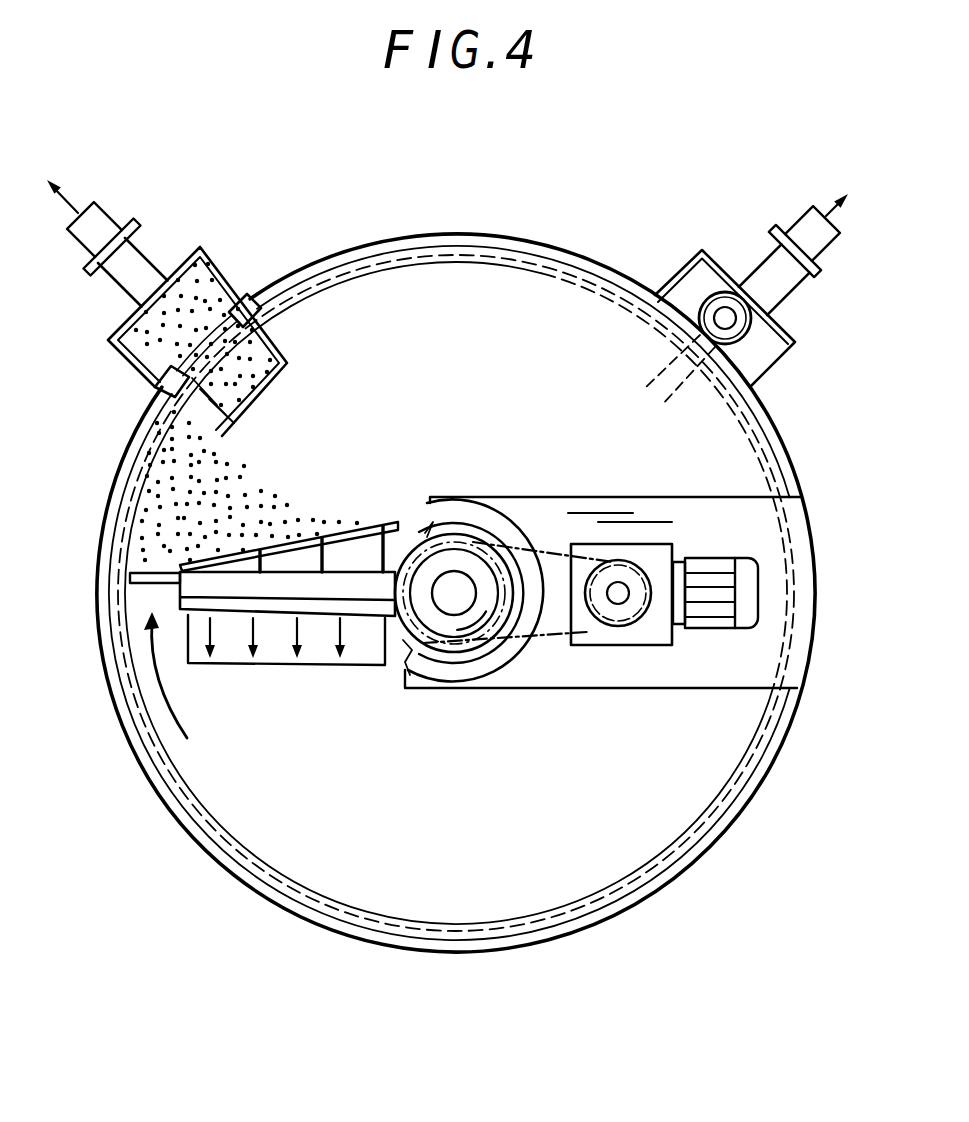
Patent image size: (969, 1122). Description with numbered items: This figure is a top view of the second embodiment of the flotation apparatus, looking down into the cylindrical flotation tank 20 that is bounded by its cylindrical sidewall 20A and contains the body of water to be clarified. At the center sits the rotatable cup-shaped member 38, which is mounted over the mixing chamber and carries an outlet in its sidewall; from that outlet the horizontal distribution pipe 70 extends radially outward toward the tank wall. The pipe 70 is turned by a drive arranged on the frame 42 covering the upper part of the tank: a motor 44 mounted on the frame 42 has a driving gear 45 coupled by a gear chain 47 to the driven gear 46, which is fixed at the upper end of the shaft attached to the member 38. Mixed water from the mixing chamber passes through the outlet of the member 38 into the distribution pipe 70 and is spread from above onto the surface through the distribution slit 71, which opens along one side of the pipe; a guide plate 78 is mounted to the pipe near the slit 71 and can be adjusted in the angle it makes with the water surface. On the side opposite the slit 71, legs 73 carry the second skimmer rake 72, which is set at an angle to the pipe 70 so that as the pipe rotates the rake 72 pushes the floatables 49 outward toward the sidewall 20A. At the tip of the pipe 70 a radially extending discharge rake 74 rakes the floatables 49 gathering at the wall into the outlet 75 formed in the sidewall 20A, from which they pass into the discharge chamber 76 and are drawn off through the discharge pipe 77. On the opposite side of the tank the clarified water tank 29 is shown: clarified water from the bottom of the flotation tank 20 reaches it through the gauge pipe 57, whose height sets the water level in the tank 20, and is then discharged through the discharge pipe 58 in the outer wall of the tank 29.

The flotation tank 20 is at (246, 880).
The cylindrical sidewall 20A is at (580, 918).
The clarified water tank 29 is at (710, 250).
The cup-shaped member 38 is at (412, 530).
The frame 42 is at (748, 510).
The motor 44 is at (672, 642).
The driving gear 45 is at (620, 620).
The driven gear 46 is at (433, 648).
The gear chain 47 is at (540, 642).
The floatables 49 is at (145, 505).
The gauge pipe 57 is at (743, 341).
The discharge pipe 58 is at (817, 243).
The distribution pipe 70 is at (278, 594).
The distribution slit 71 is at (200, 634).
The second skimmer rake 72 is at (302, 534).
The legs 73 is at (330, 560).
The discharge rake 74 is at (142, 585).
The outlet 75 is at (265, 338).
The discharge chamber 76 is at (192, 274).
The discharge pipe 77 is at (88, 240).
The guide plate 78 is at (318, 655).